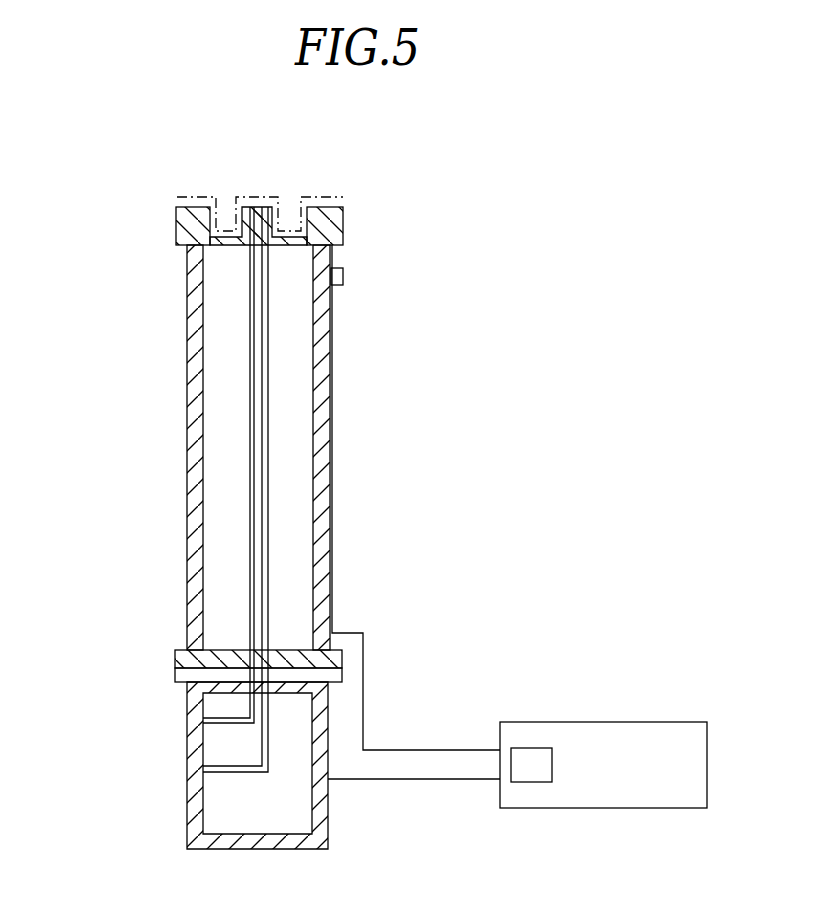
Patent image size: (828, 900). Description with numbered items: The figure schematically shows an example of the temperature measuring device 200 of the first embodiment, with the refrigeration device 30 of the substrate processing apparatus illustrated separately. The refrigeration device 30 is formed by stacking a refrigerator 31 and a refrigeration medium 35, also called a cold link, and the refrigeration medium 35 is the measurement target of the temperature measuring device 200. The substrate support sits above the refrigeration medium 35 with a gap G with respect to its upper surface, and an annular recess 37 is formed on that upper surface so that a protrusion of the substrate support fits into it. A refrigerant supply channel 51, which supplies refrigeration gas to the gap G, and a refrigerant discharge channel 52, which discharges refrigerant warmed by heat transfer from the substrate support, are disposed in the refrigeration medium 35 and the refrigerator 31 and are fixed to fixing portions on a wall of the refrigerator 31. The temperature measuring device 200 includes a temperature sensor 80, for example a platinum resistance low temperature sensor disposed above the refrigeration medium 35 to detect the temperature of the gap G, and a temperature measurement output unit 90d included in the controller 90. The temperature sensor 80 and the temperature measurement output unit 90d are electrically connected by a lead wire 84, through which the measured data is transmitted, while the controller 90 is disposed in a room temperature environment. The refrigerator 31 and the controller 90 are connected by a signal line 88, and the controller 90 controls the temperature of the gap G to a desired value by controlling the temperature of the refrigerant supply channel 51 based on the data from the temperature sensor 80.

The temperature measuring device 200 is at (528, 234).
The gap G is at (162, 204).
The recess 37 is at (176, 229).
The refrigeration device 30 is at (72, 383).
The refrigeration medium 35 is at (187, 382).
The refrigerator 31 is at (187, 710).
The refrigerant supply channel 51 is at (257, 350).
The refrigerant discharge channel 52 is at (270, 382).
The temperature sensor 80 is at (343, 274).
The lead wire 84 is at (334, 430).
The signal line 88 is at (412, 782).
The controller 90 is at (572, 722).
The temperature measurement output unit 90d is at (523, 782).